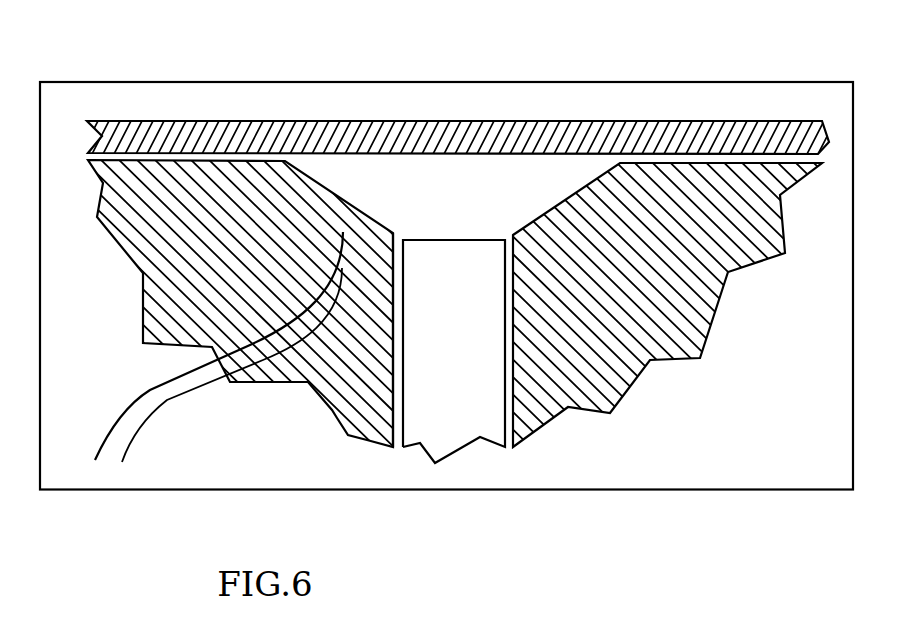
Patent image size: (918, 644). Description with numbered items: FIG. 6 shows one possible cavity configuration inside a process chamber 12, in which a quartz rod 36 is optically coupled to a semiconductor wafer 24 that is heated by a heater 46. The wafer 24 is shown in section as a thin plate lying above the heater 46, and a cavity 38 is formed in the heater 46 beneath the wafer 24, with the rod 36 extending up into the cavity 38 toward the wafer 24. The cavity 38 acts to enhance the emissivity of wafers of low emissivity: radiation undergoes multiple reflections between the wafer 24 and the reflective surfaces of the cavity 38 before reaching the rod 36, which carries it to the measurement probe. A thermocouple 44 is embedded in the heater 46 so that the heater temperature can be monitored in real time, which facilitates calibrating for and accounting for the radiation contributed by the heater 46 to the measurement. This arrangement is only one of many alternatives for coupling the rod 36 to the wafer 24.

The process chamber 12 is at (53, 100).
The wafer 24 is at (307, 132).
The rod 36 is at (436, 412).
The cavity 38 is at (472, 190).
The thermocouple 44 is at (350, 245).
The heater 46 is at (230, 223).